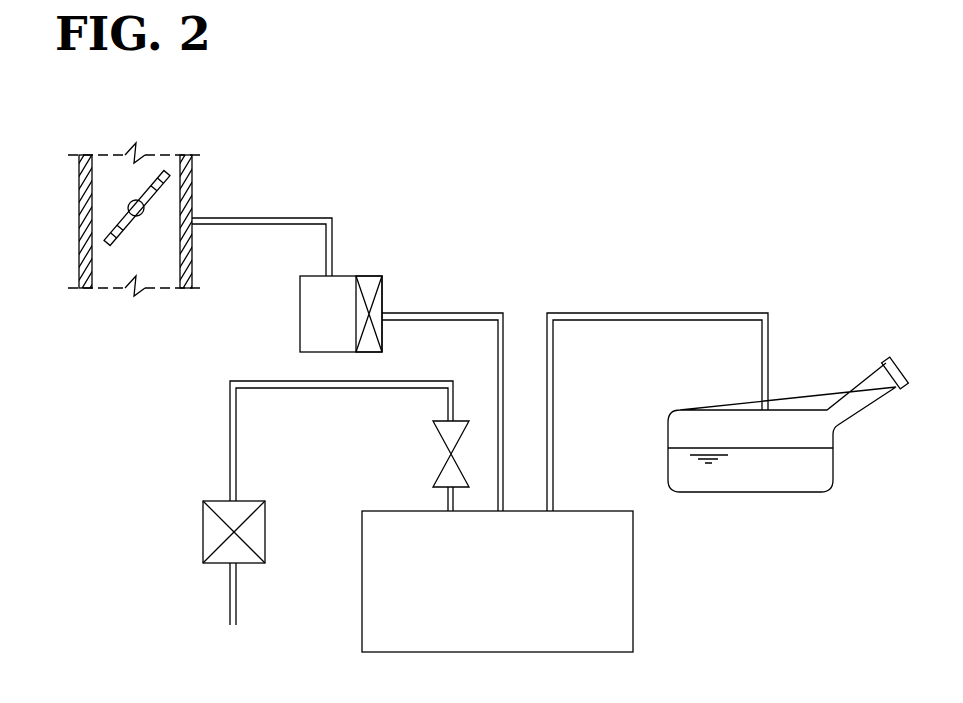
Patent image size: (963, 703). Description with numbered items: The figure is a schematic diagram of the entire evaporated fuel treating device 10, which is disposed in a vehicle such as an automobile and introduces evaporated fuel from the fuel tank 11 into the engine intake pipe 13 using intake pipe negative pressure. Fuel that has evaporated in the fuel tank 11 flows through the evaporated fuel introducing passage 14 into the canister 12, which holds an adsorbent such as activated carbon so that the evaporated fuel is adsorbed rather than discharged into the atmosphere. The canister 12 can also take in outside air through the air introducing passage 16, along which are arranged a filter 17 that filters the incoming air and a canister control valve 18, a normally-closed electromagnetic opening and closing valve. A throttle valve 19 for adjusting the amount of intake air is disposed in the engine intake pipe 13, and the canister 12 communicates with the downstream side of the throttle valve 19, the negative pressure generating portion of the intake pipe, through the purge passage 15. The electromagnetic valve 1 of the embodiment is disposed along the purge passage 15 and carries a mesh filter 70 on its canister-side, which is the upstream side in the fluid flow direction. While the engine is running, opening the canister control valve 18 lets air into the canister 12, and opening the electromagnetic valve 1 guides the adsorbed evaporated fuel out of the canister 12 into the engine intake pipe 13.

The evaporated fuel treating device 10 is at (604, 182).
The fuel tank 11 is at (786, 495).
The canister 12 is at (633, 580).
The engine intake pipe 13 is at (79, 181).
The evaporated fuel introducing passage 14 is at (608, 313).
The purge passage 15 is at (440, 313).
The air introducing passage 16 is at (230, 432).
The filter 17 is at (215, 537).
The canister control valve 18 is at (433, 440).
The throttle valve 19 is at (108, 240).
The electromagnetic valve 1 is at (300, 318).
The mesh filter 70 is at (368, 284).